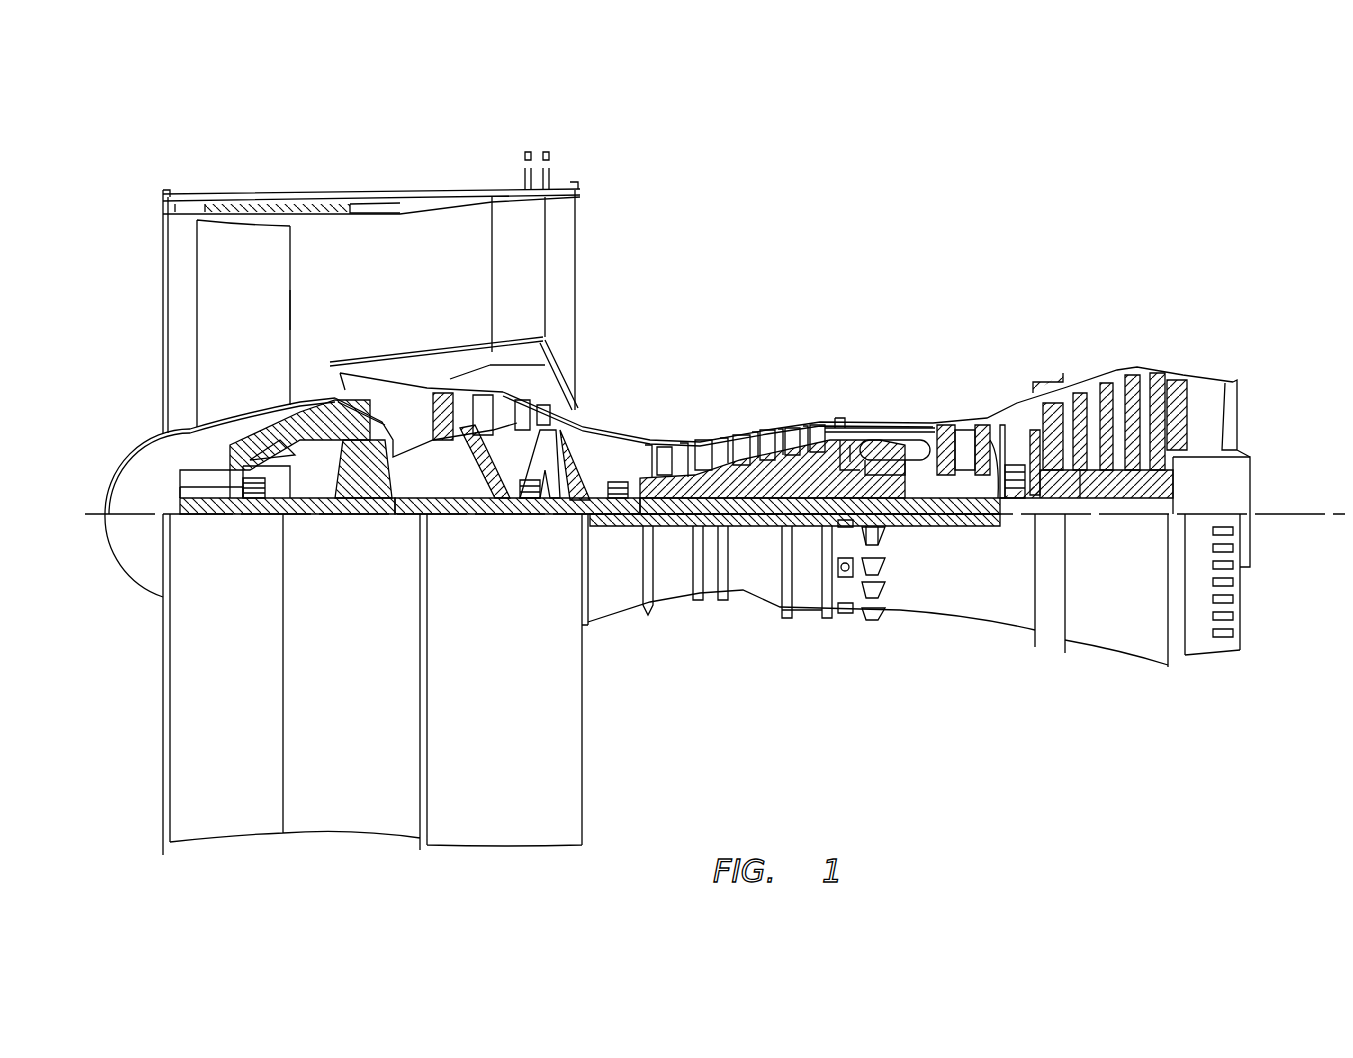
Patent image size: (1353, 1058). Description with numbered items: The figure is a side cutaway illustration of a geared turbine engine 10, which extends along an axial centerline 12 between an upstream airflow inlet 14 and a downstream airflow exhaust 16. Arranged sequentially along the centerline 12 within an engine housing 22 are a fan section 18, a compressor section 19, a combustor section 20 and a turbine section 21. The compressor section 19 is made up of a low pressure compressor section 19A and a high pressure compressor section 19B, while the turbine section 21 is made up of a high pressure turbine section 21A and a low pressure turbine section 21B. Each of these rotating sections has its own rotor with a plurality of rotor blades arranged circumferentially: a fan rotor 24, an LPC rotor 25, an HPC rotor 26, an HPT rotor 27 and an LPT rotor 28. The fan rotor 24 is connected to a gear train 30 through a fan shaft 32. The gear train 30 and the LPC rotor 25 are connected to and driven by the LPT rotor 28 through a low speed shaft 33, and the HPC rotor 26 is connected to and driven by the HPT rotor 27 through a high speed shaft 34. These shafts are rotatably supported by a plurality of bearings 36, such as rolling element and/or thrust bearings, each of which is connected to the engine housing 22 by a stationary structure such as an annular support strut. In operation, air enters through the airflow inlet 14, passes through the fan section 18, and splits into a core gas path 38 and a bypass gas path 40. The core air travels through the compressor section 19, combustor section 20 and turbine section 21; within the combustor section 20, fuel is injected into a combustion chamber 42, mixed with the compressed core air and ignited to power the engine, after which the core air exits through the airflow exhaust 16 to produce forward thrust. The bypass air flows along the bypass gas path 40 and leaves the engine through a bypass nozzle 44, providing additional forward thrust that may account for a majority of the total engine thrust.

The geared turbine engine 10 is at (130, 176).
The axial centerline 12 is at (1318, 512).
The airflow inlet 14 is at (163, 268).
The airflow exhaust 16 is at (1245, 410).
The fan section 18 is at (335, 168).
The compressor section 19 is at (800, 107).
The low pressure compressor (LPC) section 19A is at (580, 153).
The high pressure compressor (HPC) section 19B is at (803, 349).
The combustor section 20 is at (930, 351).
The turbine section 21 is at (1198, 276).
The high pressure turbine (HPT) section 21A is at (1013, 351).
The low pressure turbine (LPT) section 21B is at (1198, 351).
The engine housing 22 is at (603, 633).
The fan rotor 24 is at (172, 427).
The LPC rotor 25 is at (478, 478).
The HPC rotor 26 is at (752, 478).
The HPT rotor 27 is at (968, 516).
The LPT rotor 28 is at (1107, 465).
The gear train 30 is at (375, 516).
The fan shaft 32 is at (234, 516).
The low speed shaft 33 is at (803, 528).
The high speed shaft 34 is at (893, 505).
The bearings 36 is at (268, 515).
The core gas path 38 is at (598, 440).
The bypass gas path 40 is at (428, 286).
The combustion chamber 42 is at (885, 445).
The bypass nozzle 44 is at (580, 258).